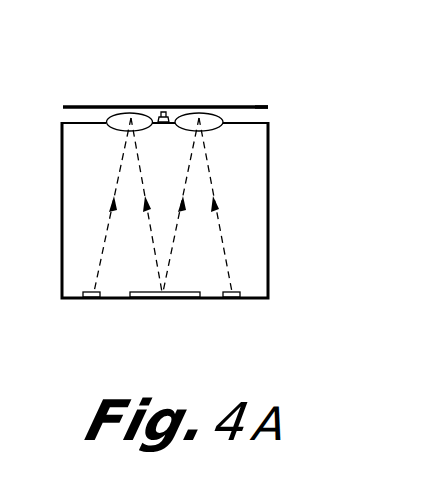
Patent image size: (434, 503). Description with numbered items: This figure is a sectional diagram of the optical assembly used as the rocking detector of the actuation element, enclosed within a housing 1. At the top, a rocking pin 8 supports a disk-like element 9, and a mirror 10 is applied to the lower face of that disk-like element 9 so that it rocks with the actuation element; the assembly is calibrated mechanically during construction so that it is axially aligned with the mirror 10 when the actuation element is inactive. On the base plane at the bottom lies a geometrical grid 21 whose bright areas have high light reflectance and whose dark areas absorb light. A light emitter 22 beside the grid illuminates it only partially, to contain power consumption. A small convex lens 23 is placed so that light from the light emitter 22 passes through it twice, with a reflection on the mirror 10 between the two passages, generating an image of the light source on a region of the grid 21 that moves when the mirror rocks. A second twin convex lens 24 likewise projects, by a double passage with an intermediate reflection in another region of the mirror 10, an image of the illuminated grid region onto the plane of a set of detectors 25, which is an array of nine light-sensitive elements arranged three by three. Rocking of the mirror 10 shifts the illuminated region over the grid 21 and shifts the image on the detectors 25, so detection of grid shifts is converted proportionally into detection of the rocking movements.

The housing 1 is at (333, 187).
The rocking pin 8 is at (166, 110).
The disk-like element 9 is at (64, 36).
The mirror 10 is at (262, 108).
The geometrical grid 21 is at (158, 302).
The light emitter 22 is at (87, 300).
The small convex lens 23 is at (127, 118).
The second twin convex lens 24 is at (211, 118).
The set of detectors 25 is at (235, 300).